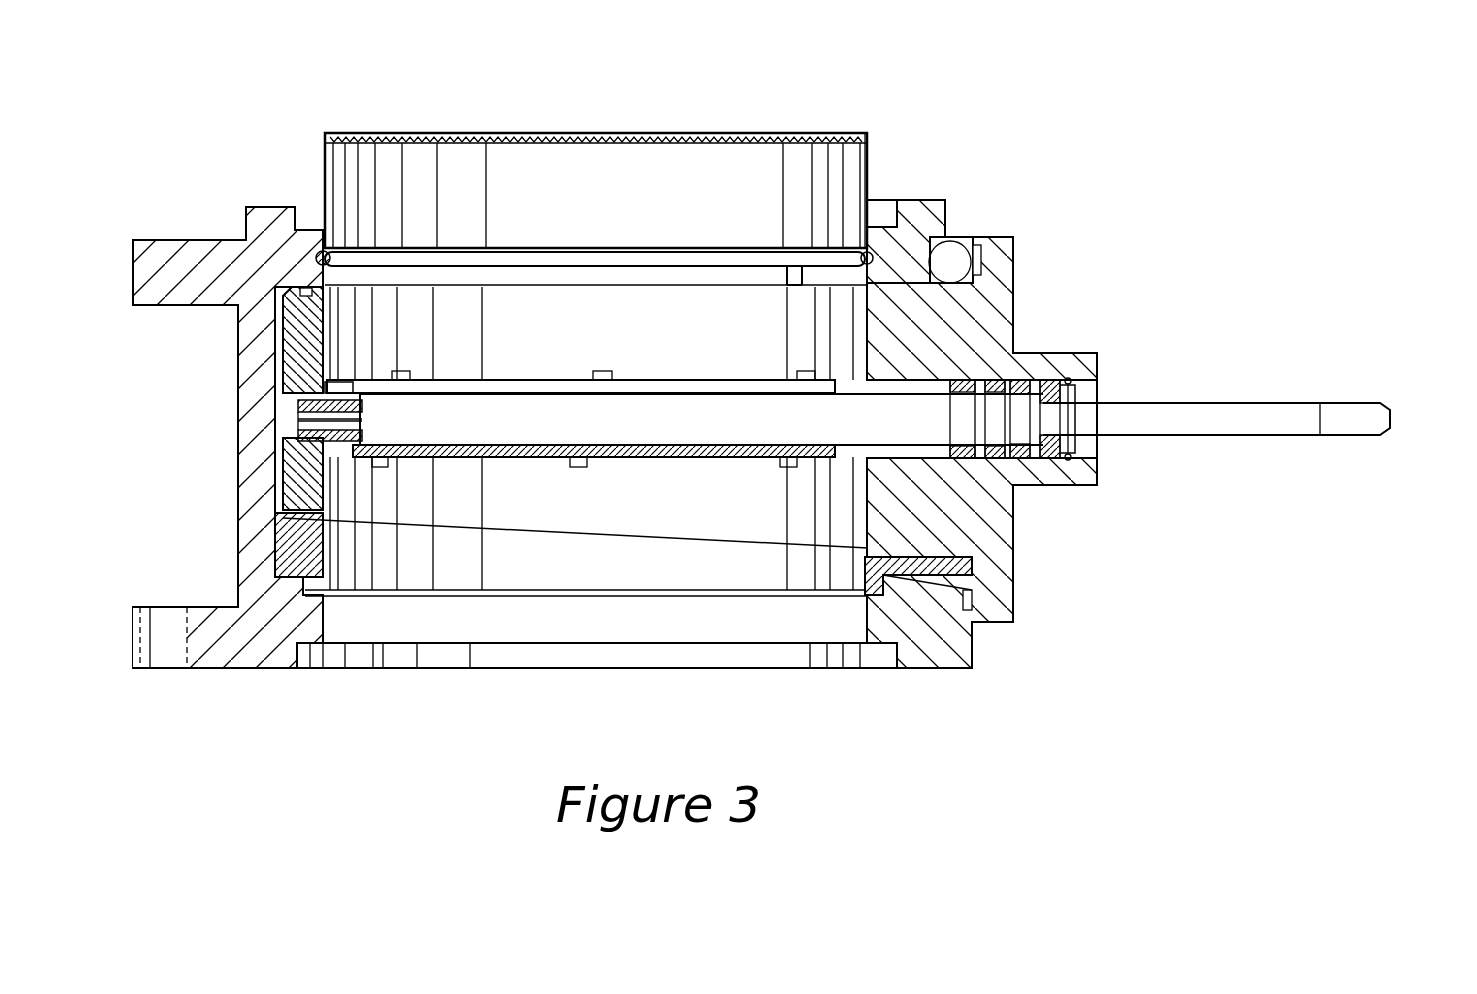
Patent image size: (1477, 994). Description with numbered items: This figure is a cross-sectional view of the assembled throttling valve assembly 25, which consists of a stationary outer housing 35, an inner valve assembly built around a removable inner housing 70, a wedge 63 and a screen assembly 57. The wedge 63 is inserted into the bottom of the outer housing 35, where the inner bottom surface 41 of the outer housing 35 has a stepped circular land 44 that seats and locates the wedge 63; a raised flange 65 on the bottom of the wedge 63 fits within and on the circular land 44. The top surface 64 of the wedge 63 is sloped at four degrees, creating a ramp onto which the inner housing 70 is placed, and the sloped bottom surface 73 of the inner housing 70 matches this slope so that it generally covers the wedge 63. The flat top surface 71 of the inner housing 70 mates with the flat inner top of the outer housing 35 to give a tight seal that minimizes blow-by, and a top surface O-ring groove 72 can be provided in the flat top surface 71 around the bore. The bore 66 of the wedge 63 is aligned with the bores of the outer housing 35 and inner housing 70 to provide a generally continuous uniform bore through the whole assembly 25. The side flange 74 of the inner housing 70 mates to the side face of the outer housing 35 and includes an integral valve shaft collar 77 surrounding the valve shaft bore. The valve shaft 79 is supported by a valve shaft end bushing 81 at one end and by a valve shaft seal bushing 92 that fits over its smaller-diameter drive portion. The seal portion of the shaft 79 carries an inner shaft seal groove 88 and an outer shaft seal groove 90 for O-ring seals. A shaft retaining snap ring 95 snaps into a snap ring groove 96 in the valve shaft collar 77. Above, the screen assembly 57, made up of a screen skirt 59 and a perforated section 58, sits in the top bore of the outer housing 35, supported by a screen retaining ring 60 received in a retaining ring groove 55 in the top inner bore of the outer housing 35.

The valve assembly 25 is at (1195, 224).
The stationary outer housing 35 is at (930, 672).
The inner bottom surface 41 is at (935, 550).
The stepped circular land 44 is at (345, 580).
The retaining ring groove 55 is at (893, 192).
The screen assembly 57 is at (903, 93).
The perforated section 58 is at (733, 133).
The screen skirt 59 is at (323, 178).
The screen retaining ring 60 is at (412, 258).
The wedge 63 is at (465, 555).
The top surface 64 is at (715, 505).
The raised flange 65 is at (300, 583).
The bore 66 is at (350, 590).
The inner housing 70 is at (1015, 272).
The flat top surface 71 is at (946, 250).
The top surface O-ring groove 72 is at (302, 292).
The sloped bottom surface 73 is at (968, 582).
The side flange 74 is at (1003, 595).
The valve shaft collar 77 is at (1098, 365).
The valve shaft 79 is at (1376, 382).
The valve shaft end bushing 81 is at (327, 440).
The inner shaft seal groove 88 is at (958, 400).
The outer shaft seal groove 90 is at (1030, 470).
The valve shaft seal bushing 92 is at (1020, 395).
The shaft retaining snap ring 95 is at (1080, 392).
The snap ring groove 96 is at (1068, 462).